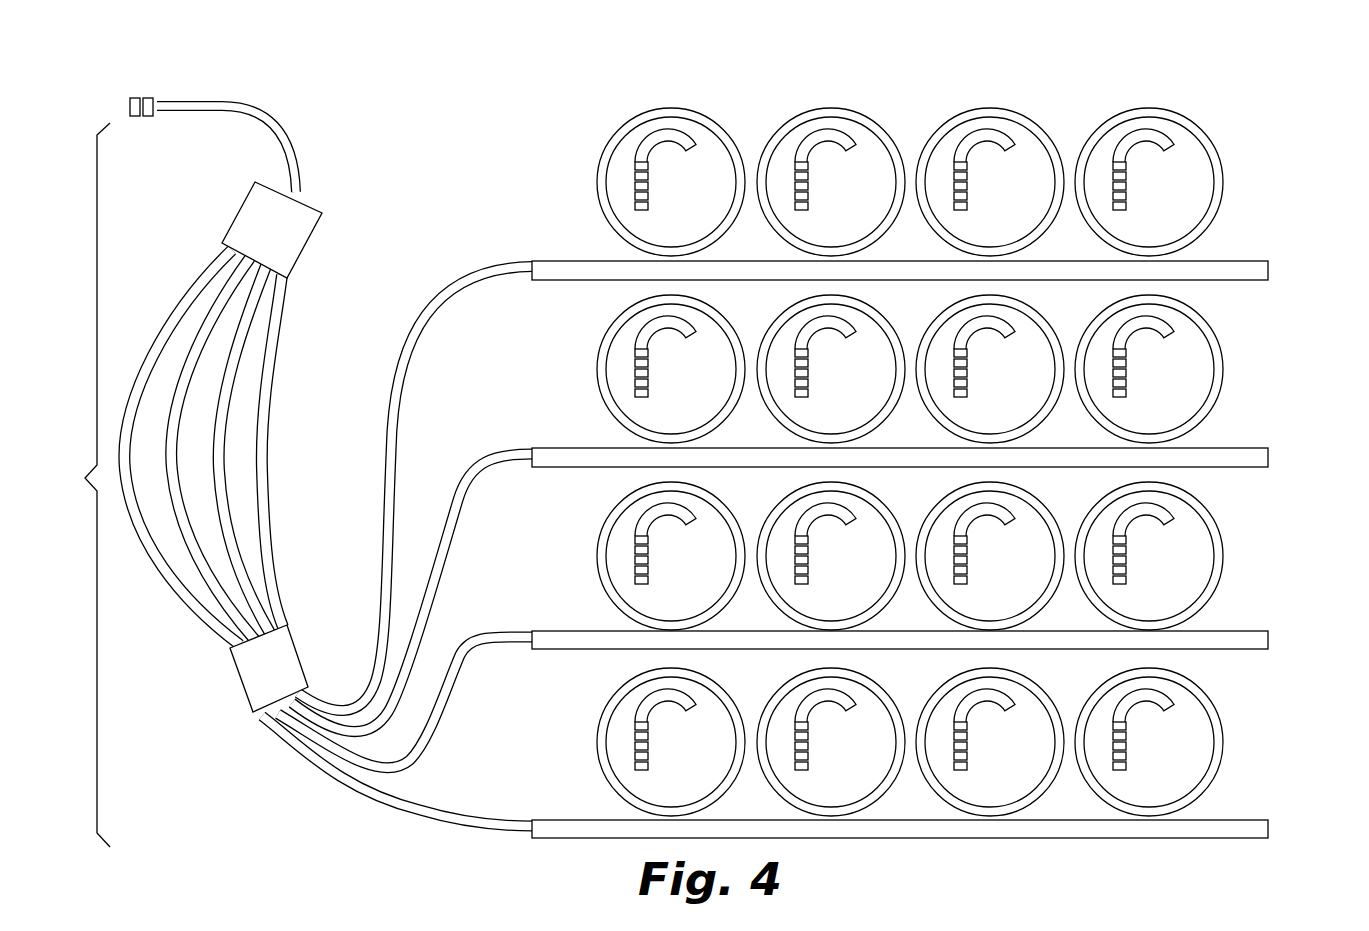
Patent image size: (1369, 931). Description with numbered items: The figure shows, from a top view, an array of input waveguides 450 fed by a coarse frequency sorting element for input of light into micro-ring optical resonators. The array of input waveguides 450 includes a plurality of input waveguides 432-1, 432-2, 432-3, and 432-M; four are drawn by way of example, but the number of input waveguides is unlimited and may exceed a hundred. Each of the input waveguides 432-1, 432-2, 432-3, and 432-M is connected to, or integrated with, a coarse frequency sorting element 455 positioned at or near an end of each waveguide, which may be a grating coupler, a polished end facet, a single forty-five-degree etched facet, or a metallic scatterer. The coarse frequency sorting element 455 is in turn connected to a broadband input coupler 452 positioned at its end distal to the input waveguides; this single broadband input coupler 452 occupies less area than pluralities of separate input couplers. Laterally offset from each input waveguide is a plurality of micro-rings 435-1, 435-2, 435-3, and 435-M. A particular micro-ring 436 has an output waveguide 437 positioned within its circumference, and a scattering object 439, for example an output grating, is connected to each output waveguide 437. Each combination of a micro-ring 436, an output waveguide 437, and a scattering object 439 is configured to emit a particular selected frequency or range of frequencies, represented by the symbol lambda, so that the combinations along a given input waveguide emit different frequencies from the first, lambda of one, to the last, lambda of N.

The array of input waveguides 450 is at (402, 70).
The broadband input coupler 452 is at (133, 92).
The coarse frequency sorting element 455 is at (287, 476).
The input waveguide 432-1 is at (552, 258).
The input waveguide 432-2 is at (552, 444).
The input waveguide 432-3 is at (550, 627).
The input waveguide 432-M is at (550, 815).
The micro-ring 435-1 is at (1250, 184).
The micro-ring 435-2 is at (1250, 372).
The micro-ring 435-3 is at (1250, 558).
The micro-ring 435-M is at (1250, 745).
The micro-ring 436 is at (698, 110).
The output waveguide 437 is at (666, 126).
The scattering object 439 is at (633, 172).